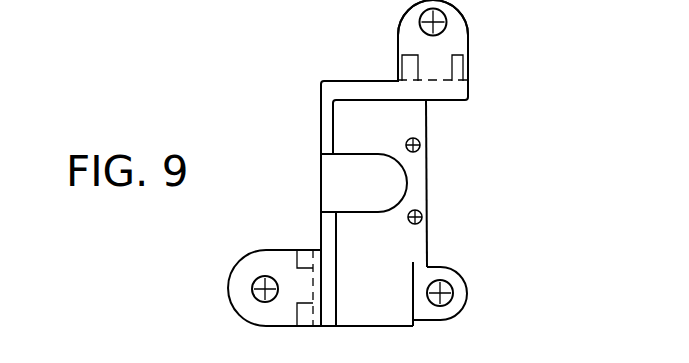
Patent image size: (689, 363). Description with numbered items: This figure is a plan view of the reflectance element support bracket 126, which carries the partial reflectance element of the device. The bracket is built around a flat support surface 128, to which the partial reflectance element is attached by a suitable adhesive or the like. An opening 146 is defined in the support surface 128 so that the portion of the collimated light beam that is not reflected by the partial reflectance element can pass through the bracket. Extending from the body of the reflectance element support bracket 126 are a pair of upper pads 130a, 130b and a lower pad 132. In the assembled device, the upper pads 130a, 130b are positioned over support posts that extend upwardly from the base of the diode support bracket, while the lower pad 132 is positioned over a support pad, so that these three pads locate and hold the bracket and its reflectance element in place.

The reflectance element support bracket 126 is at (318, 82).
The support surface 128 is at (392, 304).
The upper pad 130a is at (247, 256).
The upper pad 130b is at (470, 32).
The lower pad 132 is at (457, 275).
The opening 146 is at (370, 155).